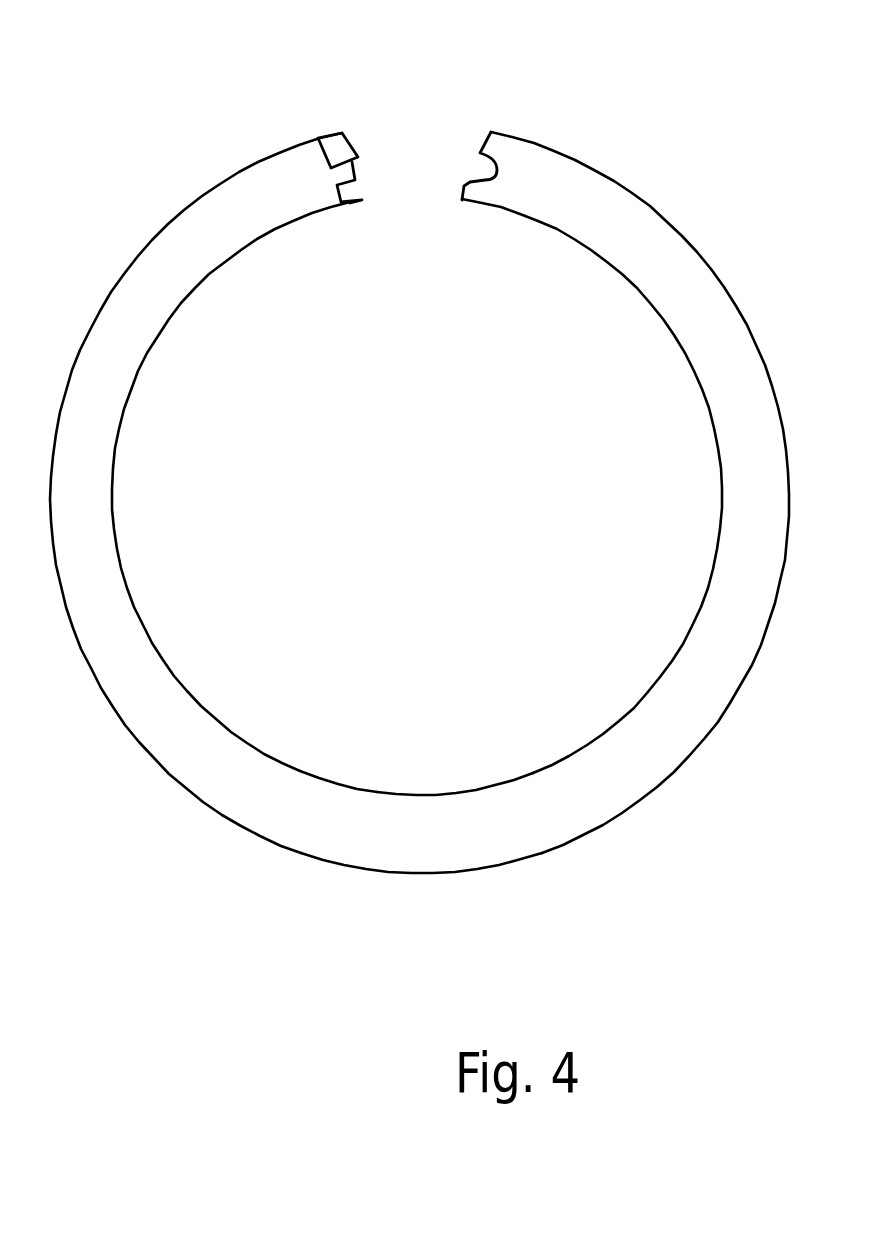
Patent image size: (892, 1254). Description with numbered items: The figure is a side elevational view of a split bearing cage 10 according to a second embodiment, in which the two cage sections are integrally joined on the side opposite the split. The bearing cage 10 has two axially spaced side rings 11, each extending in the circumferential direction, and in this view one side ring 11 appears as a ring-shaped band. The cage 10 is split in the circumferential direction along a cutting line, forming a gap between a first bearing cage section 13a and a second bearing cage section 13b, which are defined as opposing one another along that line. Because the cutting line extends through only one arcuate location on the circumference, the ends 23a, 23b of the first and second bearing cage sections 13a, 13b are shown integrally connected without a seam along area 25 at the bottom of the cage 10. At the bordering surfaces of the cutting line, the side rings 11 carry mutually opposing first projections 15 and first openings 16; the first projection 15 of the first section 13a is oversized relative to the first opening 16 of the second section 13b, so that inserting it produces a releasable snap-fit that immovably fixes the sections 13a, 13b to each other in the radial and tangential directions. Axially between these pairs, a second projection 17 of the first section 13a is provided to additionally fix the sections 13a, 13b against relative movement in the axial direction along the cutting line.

The bearing cage 10 is at (538, 105).
The side ring 11 is at (618, 208).
The first bearing cage section 13a is at (338, 236).
The second bearing cage section 13b is at (492, 224).
The first projection 15 is at (358, 157).
The first opening 16 is at (476, 168).
The second projection 17 is at (357, 144).
The end of first bearing cage section 23a is at (442, 895).
The end of second bearing cage section 23b is at (400, 894).
The area 25 is at (433, 825).